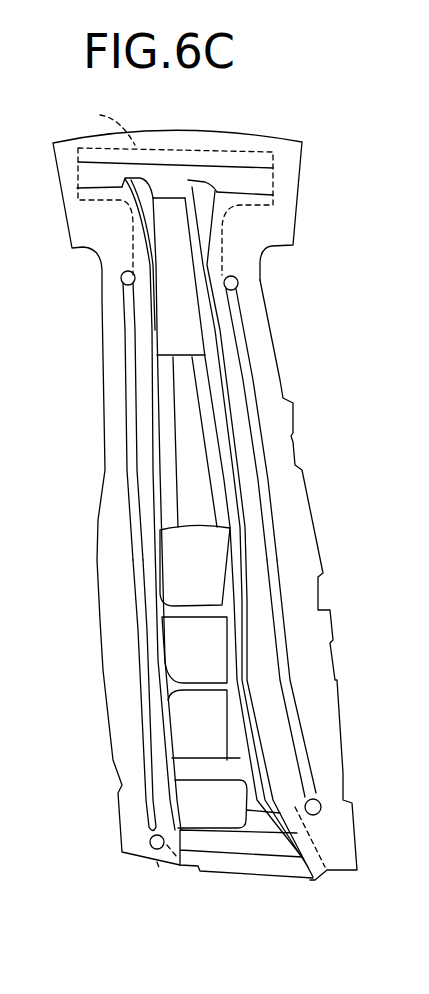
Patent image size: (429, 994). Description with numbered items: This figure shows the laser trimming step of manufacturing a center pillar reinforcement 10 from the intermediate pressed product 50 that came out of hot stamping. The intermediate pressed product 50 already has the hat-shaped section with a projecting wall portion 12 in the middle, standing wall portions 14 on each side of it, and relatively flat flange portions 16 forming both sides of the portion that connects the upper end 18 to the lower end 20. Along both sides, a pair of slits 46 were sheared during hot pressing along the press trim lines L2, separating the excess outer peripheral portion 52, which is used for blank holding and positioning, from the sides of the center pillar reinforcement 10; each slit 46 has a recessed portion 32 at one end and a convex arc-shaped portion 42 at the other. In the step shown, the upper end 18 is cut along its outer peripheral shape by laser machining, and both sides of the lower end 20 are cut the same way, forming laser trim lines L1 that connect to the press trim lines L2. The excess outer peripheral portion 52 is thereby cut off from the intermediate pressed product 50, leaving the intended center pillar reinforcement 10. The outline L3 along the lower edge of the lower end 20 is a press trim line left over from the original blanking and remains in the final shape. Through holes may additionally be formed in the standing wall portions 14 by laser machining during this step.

The center pillar reinforcement 10 is at (292, 203).
The projecting wall portion 12 is at (187, 398).
The standing wall portions 14 is at (160, 695).
The flange portions 16 is at (143, 503).
The upper end 18 is at (210, 143).
The lower end 20 is at (225, 884).
The recessed portion 32 is at (123, 277).
The convex arc-shaped portion 42 is at (150, 842).
The slits 46 is at (133, 597).
The intermediate pressed product 50 is at (177, 494).
The excess outer peripheral portion 52 is at (298, 520).
The laser trim lines L1 is at (375, 838).
The press trim lines L2 is at (133, 443).
The outline of the lower edge of the lower end L3 is at (277, 880).